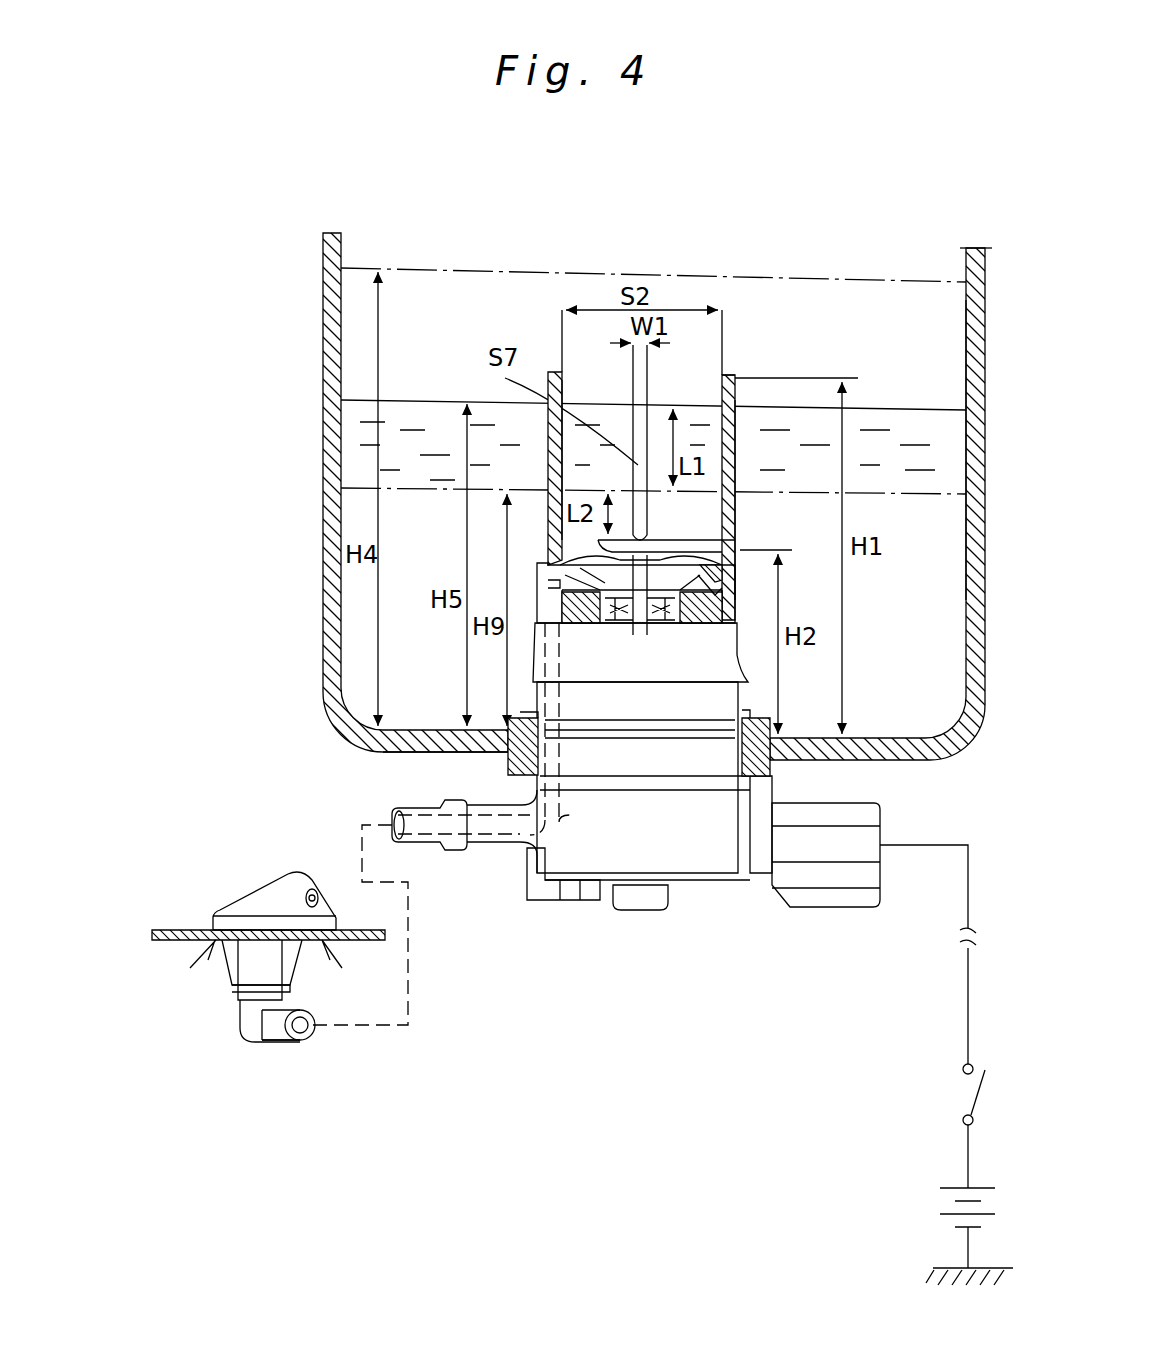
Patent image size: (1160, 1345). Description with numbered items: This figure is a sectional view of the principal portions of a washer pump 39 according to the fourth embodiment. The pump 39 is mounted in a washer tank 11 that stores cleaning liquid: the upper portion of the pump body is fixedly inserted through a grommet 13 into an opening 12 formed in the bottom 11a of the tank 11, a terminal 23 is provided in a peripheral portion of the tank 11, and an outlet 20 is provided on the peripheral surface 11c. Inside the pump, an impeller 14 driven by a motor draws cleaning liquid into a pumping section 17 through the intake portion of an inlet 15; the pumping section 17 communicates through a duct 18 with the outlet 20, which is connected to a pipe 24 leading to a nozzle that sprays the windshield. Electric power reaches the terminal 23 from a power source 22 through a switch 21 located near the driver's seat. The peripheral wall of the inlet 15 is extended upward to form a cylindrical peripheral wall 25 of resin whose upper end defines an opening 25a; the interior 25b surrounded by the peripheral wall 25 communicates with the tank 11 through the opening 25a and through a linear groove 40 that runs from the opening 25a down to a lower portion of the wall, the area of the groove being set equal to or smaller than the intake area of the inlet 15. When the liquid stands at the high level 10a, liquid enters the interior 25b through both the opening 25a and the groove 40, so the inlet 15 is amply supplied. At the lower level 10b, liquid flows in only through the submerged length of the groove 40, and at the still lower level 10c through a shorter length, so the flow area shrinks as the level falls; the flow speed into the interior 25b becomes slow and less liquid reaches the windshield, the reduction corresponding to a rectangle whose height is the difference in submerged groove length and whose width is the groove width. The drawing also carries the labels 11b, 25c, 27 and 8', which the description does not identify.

The washer tank 11 is at (333, 236).
The bottom of the washer tank 11a is at (465, 750).
The tank side wall 11b is at (962, 274).
The peripheral surface of the tank 11c is at (980, 275).
The cleaning liquid level 10a is at (470, 268).
The cleaning liquid level 10b is at (445, 400).
The cleaning liquid level 10c is at (405, 490).
The opening 12 is at (390, 745).
The grommet 13 is at (770, 768).
The impeller 14 is at (587, 570).
The inlet 15 is at (668, 534).
The pumping section 17 is at (713, 582).
The duct 18 is at (530, 878).
The outlet 20 is at (507, 838).
The switch 21 is at (958, 1091).
The power source 22 is at (950, 1201).
The terminal 23 is at (846, 853).
The pipe 24 is at (420, 842).
The cylindrical peripheral wall 25 is at (550, 370).
The opening 25a is at (560, 390).
The interior of the peripheral wall 25b is at (735, 395).
The outer wall of tubular member 25c is at (748, 420).
The washer nozzle 27 is at (248, 972).
The pump 39 is at (693, 862).
The linear groove 40 is at (702, 390).
The hose 8' is at (313, 1000).